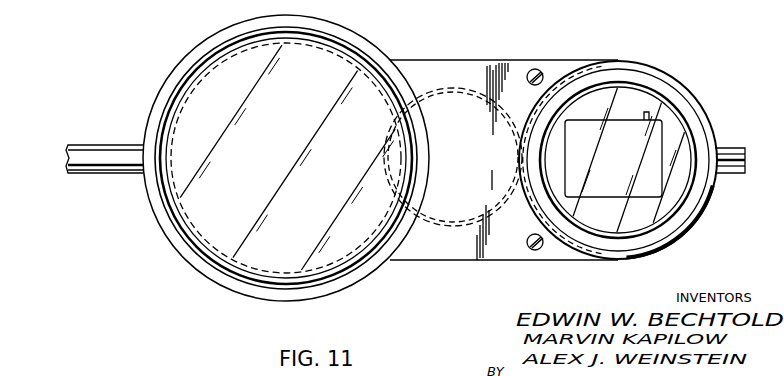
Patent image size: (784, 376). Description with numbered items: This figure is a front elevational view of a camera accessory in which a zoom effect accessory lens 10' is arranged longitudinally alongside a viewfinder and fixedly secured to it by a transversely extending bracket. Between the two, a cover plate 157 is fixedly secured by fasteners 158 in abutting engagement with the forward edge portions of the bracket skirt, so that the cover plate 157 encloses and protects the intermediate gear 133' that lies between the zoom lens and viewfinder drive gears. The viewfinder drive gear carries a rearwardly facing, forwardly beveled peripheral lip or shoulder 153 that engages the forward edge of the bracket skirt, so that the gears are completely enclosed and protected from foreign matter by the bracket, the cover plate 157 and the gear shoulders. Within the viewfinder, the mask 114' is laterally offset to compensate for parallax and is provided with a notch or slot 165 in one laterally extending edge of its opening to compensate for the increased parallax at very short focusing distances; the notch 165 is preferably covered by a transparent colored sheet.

The zoom effect accessory lens 10' is at (247, 158).
The intermediate gear 133' is at (453, 120).
The cover plate 157 is at (487, 70).
The fasteners 158 is at (540, 72).
The notch or slot 165 is at (651, 112).
The mask 114' is at (655, 140).
The peripheral lip or shoulder 153 is at (714, 131).